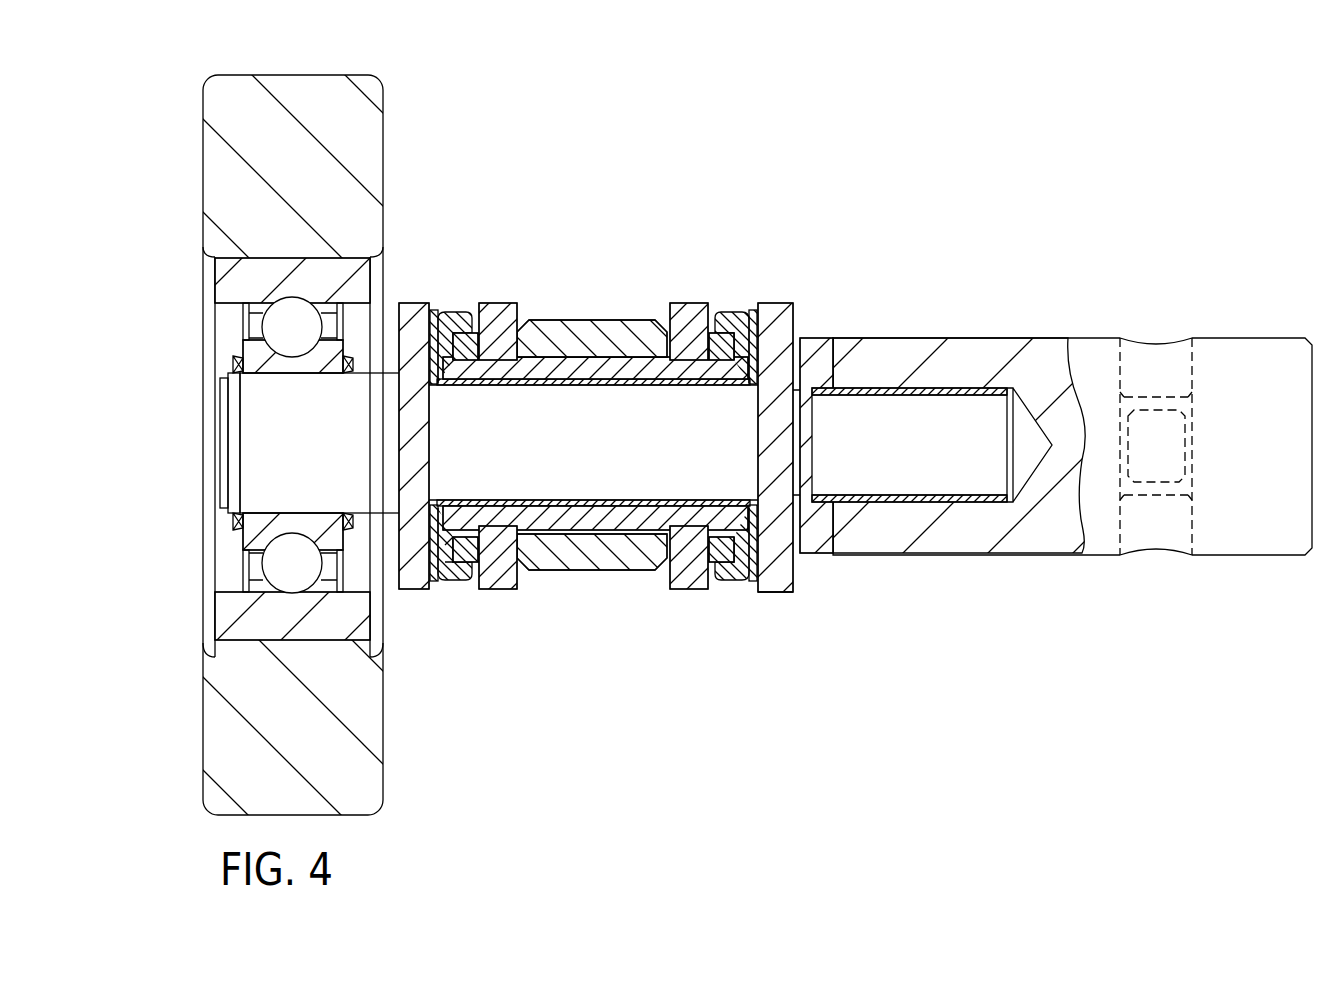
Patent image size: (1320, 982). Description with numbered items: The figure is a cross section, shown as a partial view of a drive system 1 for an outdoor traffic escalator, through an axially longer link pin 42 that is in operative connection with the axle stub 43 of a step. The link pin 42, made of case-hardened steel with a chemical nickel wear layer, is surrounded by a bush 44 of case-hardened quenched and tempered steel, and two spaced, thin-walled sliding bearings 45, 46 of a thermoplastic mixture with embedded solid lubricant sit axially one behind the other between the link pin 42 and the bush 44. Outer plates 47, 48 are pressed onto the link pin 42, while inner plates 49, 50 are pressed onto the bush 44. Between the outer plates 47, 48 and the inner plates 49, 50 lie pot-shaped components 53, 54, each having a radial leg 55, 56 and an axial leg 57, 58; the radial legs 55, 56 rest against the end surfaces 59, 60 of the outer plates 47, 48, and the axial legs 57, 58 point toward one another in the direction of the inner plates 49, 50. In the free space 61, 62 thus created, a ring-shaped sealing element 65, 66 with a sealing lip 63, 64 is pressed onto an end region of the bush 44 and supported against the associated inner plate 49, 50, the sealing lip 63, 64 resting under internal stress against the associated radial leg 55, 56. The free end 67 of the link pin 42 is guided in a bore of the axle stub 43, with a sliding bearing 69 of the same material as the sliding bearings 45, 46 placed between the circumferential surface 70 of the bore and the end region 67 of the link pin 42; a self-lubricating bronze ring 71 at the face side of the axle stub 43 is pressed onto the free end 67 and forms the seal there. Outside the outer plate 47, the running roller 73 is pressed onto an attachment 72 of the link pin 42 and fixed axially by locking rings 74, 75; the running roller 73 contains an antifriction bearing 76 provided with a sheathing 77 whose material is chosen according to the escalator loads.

The drive system 1 is at (620, 545).
The link pin 42 is at (612, 433).
The axle stub 43 is at (1072, 447).
The bush 44 is at (570, 332).
The sliding bearing 45 is at (540, 534).
The sliding bearing 46 is at (680, 507).
The outer plate 47 is at (415, 300).
The outer plate 48 is at (785, 303).
The inner plate 49 is at (505, 306).
The inner plate 50 is at (689, 303).
The pot-shaped component 53 is at (475, 412).
The pot-shaped component 54 is at (737, 405).
The radial leg 55 is at (432, 372).
The radial leg 56 is at (767, 390).
The axial leg 57 is at (460, 582).
The axial leg 58 is at (727, 592).
The end surface 59 is at (440, 592).
The end surface 60 is at (775, 595).
The free space 61 is at (470, 565).
The free space 62 is at (722, 582).
The sealing lip 63 is at (455, 322).
The sealing lip 64 is at (737, 322).
The sealing element 65 is at (455, 520).
The sealing element 66 is at (740, 520).
The free end 67 is at (925, 405).
The sliding bearing 69 is at (880, 530).
The circumferential surface 70 is at (950, 505).
The bronze ring 71 is at (822, 345).
The attachment 72 is at (256, 433).
The running roller 73 is at (325, 419).
The locking ring 74 is at (218, 512).
The locking ring 75 is at (353, 520).
The antifriction bearing 76 is at (225, 605).
The sheathing 77 is at (385, 745).